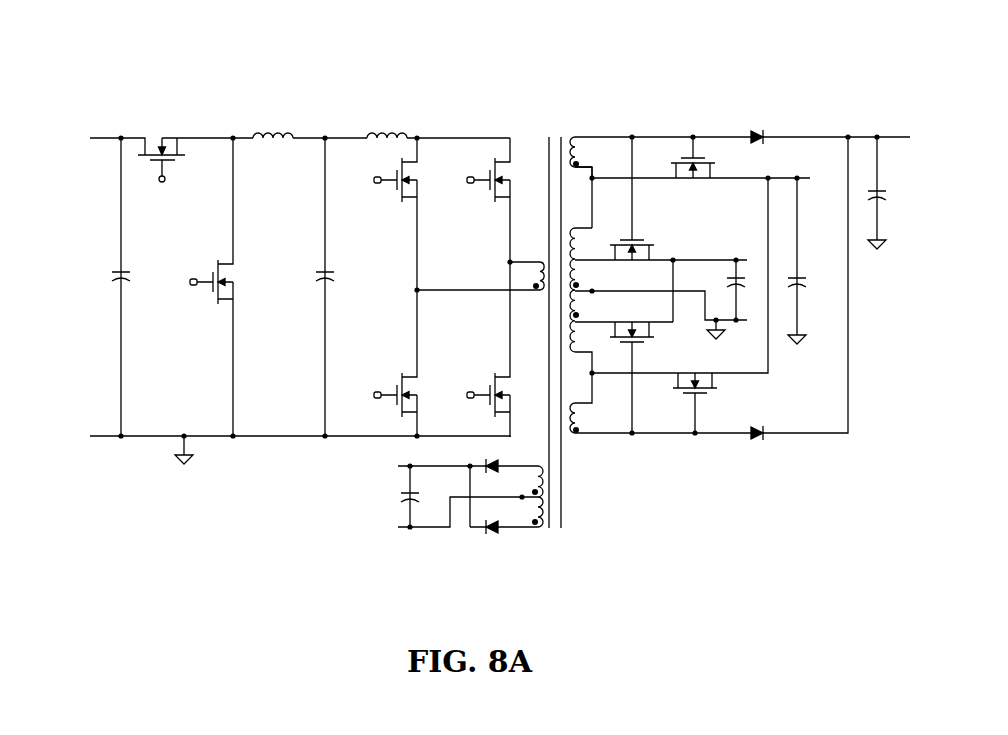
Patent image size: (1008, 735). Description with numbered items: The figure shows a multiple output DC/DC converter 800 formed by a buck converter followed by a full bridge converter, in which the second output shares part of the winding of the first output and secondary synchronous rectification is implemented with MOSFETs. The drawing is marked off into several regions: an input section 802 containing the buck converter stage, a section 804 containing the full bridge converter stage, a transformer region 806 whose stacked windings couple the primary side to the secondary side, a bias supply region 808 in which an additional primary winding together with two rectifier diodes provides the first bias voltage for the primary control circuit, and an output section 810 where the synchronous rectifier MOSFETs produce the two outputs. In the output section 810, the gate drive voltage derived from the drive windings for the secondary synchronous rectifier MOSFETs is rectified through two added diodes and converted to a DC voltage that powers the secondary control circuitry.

The multiple output DC/DC converter 800 is at (150, 563).
The input buck stage 802 is at (339, 109).
The full-bridge inverter stage 804 is at (501, 106).
The transformer T1 806 is at (557, 107).
The primary bias supply 808 is at (507, 553).
The secondary output stage 810 is at (917, 109).